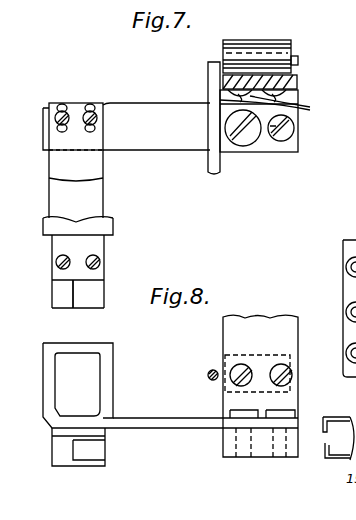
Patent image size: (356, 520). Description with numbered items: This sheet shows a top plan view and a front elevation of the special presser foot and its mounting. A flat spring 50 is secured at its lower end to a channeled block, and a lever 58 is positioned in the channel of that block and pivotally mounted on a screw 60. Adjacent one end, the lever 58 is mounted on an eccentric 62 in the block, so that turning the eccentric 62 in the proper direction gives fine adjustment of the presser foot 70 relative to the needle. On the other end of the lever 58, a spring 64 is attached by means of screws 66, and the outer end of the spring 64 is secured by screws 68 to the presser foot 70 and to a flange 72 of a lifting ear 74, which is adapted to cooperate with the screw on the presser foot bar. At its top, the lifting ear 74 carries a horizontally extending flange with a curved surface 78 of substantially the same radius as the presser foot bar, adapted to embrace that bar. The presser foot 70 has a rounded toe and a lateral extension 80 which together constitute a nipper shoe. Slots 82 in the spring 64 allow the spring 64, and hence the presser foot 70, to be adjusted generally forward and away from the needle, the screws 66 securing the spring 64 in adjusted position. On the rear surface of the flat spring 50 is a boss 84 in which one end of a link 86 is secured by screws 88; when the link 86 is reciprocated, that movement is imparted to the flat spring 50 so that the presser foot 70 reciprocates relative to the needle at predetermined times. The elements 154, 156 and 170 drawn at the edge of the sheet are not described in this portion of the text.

In FIG. 7, the flat spring 50 is at (297, 82).
In FIG. 7, the lever 58 is at (143, 110).
In FIG. 8, the lever 58 is at (162, 428).
In FIG. 7, the screw 60 is at (243, 146).
In FIG. 8, the screw 60 is at (228, 412).
In FIG. 7, the eccentric 62 is at (281, 141).
In FIG. 8, the eccentric 62 is at (293, 412).
In FIG. 7, the spring 64 is at (60, 165).
In FIG. 7, the screws 66 is at (88, 110).
In FIG. 7, the screws 68 is at (56, 265).
In FIG. 7, the presser foot 70 is at (46, 300).
In FIG. 8, the presser foot 70 is at (56, 457).
In FIG. 7, the flange 72 is at (100, 249).
In FIG. 7, the lifting ear 74 is at (106, 228).
In FIG. 8, the lifting ear 74 is at (108, 388).
In FIG. 7, the curved surface 78 is at (86, 222).
In FIG. 7, the lateral extension 80 is at (90, 306).
In FIG. 8, the lateral extension 80 is at (90, 466).
In FIG. 7, the slots 82 is at (43, 134).
In FIG. 7, the boss 84 is at (254, 44).
In FIG. 7, the link 86 is at (209, 64).
In FIG. 8, the link 86 is at (208, 375).
In FIG. 7, the screws 88 is at (274, 103).
In FIG. 8, the screws 88 is at (278, 366).
In FIG. 8, the bracket 154 is at (334, 417).
In FIG. 8, the bracket 156 is at (326, 459).
In FIG. 8, the plate with rings 170 is at (346, 352).